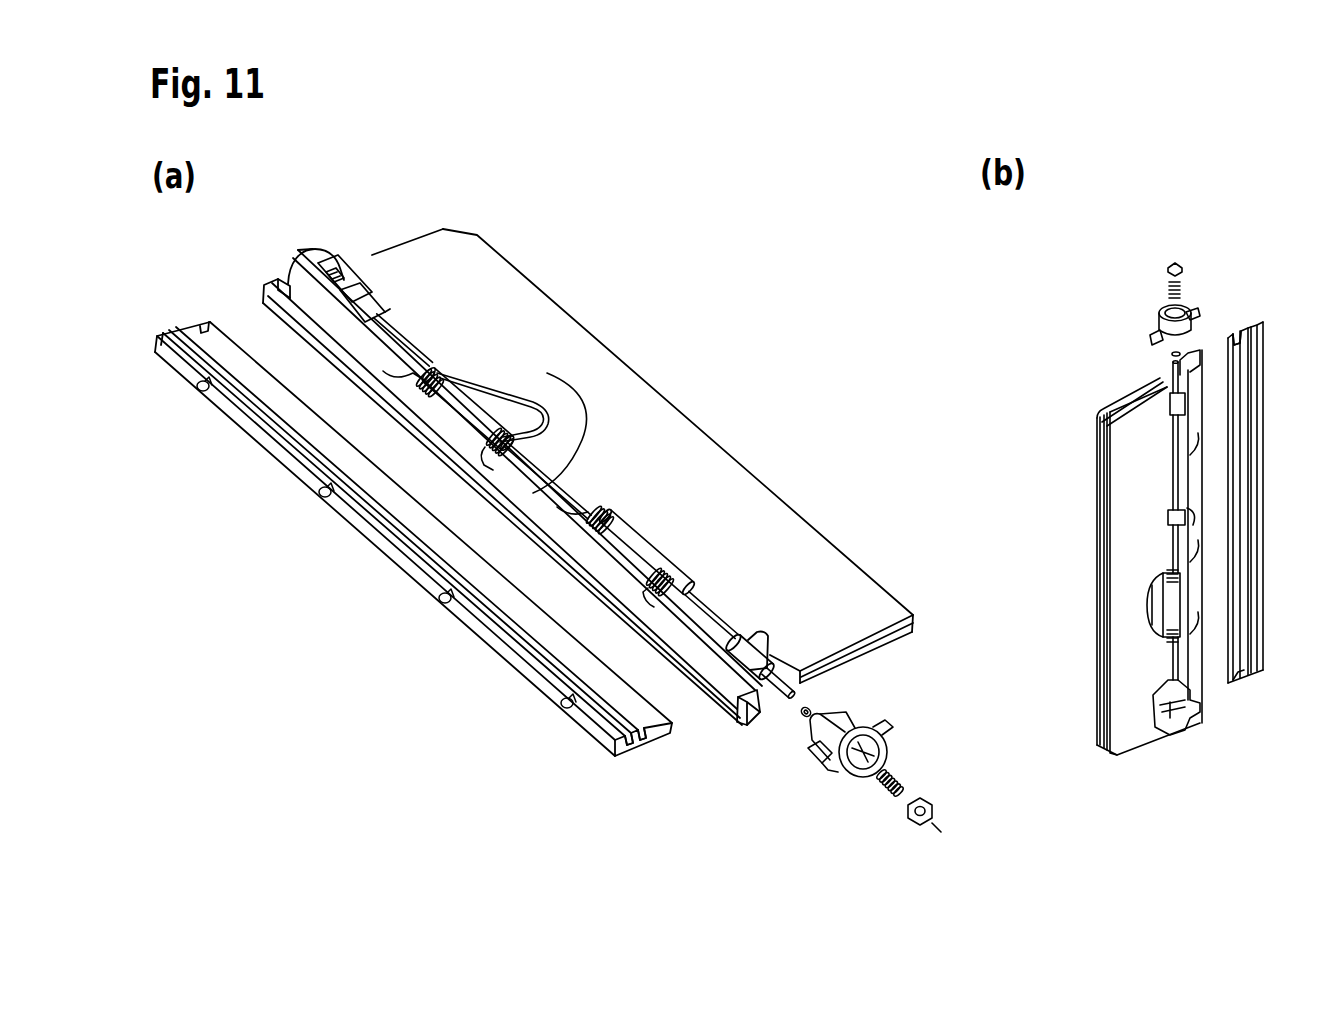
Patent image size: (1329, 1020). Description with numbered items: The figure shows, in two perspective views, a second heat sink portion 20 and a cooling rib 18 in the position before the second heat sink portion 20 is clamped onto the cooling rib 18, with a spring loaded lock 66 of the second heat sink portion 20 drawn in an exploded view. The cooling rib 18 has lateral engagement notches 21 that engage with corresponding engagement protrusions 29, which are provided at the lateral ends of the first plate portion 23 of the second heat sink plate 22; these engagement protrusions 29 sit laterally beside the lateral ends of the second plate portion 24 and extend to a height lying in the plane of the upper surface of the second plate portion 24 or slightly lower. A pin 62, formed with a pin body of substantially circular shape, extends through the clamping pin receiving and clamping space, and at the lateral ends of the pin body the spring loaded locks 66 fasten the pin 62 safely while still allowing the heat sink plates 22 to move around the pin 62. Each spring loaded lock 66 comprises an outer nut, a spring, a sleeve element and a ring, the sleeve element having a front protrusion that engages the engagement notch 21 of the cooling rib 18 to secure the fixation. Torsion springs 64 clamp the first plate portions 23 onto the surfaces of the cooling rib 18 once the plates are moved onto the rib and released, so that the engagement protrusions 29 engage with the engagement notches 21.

The cooling rib 18 is at (220, 283).
The second heat sink portion 20 is at (446, 186).
The engagement notch 21 is at (658, 742).
The second heat sink plate 22 is at (898, 647).
The first plate portion 23 is at (534, 493).
The second plate portion 24 is at (724, 492).
The engagement protrusion 29 is at (740, 727).
The pin 62 is at (777, 692).
The torsion spring 64 is at (540, 402).
The spring loaded lock 66 is at (833, 773).